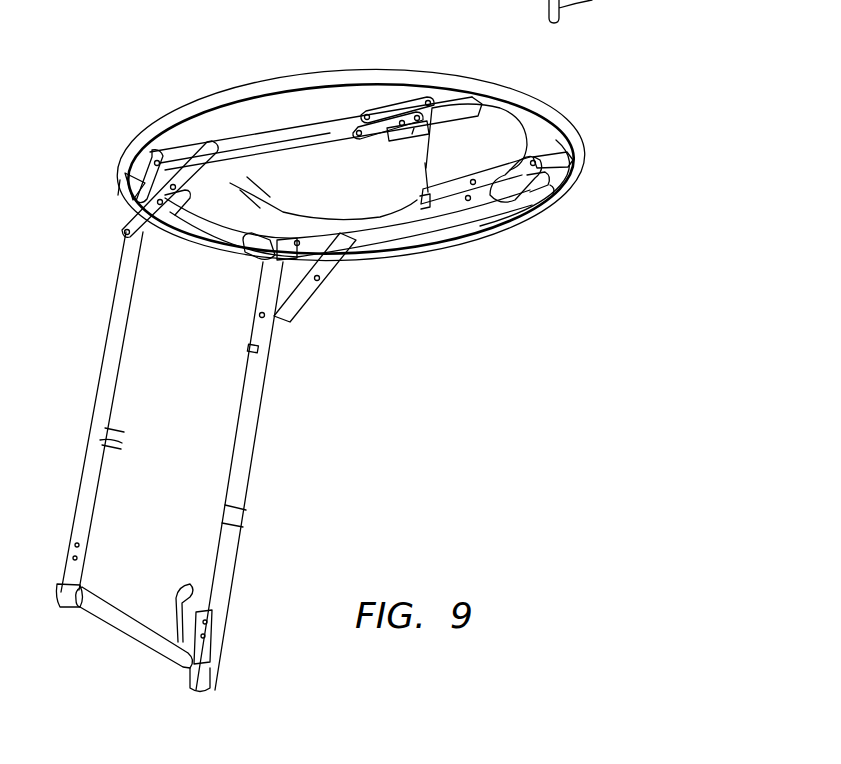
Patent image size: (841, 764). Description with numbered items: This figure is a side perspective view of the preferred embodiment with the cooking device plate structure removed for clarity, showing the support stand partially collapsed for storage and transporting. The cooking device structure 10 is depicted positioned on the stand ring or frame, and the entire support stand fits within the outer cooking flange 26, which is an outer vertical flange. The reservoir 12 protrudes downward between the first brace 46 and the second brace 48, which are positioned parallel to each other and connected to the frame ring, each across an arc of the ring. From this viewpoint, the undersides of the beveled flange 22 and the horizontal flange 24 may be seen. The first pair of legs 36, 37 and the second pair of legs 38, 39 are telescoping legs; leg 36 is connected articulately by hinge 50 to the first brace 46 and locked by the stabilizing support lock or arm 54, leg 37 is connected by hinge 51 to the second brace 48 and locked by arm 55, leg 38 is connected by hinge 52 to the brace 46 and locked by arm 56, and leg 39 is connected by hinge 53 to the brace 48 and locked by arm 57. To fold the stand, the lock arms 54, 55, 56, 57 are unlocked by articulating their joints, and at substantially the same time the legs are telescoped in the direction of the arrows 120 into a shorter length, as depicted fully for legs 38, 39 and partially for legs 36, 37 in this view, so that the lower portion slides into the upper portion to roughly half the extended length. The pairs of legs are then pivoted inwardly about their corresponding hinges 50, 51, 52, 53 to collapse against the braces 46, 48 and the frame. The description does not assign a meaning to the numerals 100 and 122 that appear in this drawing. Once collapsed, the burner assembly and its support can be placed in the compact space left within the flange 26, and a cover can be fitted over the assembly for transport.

The cooking device structure 10 is at (338, 70).
The reservoir 12 is at (393, 202).
The beveled flange 22 is at (482, 122).
The horizontal flange 24 is at (537, 130).
The outer cooking flange 26 is at (155, 130).
The leg 36 is at (100, 394).
The leg 37 is at (255, 410).
The leg 38 is at (300, 158).
The leg 39 is at (443, 213).
The first brace 46 is at (237, 142).
The second brace 48 is at (460, 185).
The hinge 50 is at (138, 200).
The hinge 51 is at (262, 278).
The hinge 52 is at (413, 135).
The hinge 53 is at (513, 192).
The stabilizing support lock or arm 54 is at (160, 233).
The stabilizing support lock or arm 55 is at (330, 264).
The stabilizing support lock or arm 56 is at (366, 116).
The stabilizing support lock or arm 57 is at (552, 196).
The fabric pocket 100 is at (190, 189).
The arrows 120 is at (318, 289).
The rotation direction arrow 122 is at (200, 490).